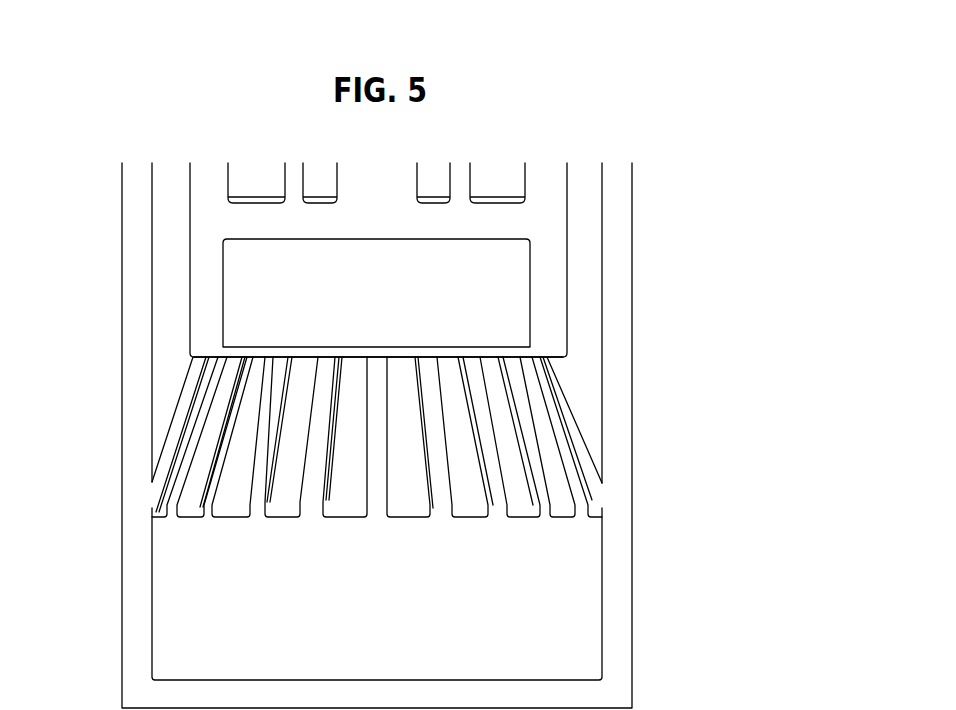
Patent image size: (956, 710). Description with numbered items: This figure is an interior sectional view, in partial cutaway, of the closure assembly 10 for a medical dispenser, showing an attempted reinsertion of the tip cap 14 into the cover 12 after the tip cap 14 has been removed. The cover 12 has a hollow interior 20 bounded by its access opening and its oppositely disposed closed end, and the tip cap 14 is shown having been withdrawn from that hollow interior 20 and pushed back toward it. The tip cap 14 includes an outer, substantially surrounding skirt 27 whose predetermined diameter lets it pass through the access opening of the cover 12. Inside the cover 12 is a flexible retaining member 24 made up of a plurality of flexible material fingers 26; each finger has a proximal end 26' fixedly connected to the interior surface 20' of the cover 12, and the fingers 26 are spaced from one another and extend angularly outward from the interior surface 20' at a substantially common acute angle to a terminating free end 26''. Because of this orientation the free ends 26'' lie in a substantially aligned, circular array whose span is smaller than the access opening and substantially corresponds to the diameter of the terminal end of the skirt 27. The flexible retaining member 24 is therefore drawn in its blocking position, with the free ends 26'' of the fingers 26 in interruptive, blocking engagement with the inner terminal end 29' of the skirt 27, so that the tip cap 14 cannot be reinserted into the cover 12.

The closure assembly 10 is at (703, 331).
The cover 12 is at (632, 580).
The tip cap 14 is at (172, 233).
The hollow interior 20 is at (377, 421).
The interior surface 20' is at (453, 260).
The flexible retaining member 24 is at (588, 422).
The flexible material fingers 26 is at (344, 481).
The proximal end 26' is at (429, 479).
The free end 26'' is at (376, 325).
The skirt 27 is at (548, 279).
The inner terminal end 29' is at (463, 361).